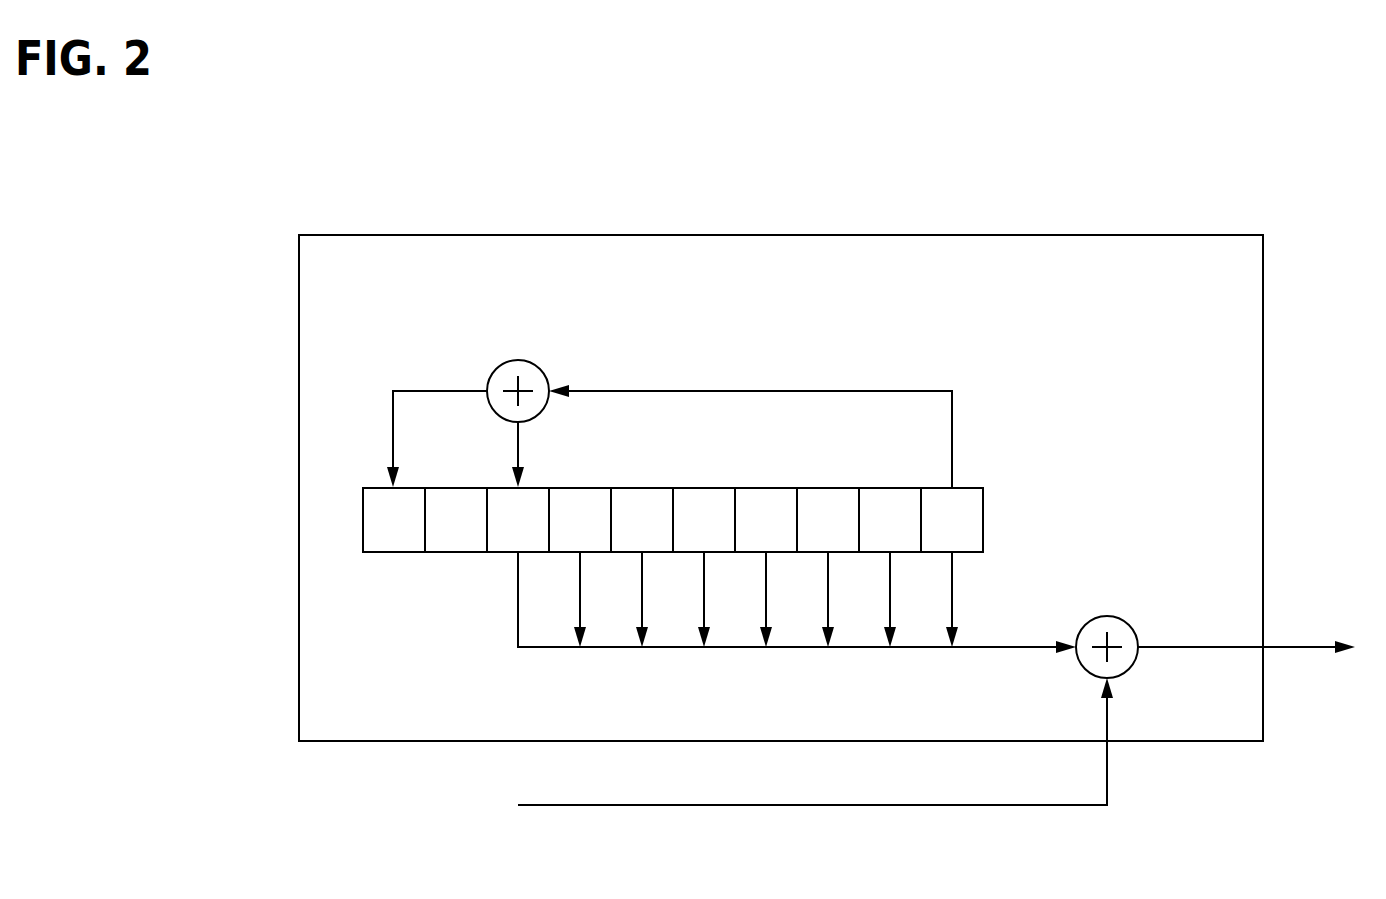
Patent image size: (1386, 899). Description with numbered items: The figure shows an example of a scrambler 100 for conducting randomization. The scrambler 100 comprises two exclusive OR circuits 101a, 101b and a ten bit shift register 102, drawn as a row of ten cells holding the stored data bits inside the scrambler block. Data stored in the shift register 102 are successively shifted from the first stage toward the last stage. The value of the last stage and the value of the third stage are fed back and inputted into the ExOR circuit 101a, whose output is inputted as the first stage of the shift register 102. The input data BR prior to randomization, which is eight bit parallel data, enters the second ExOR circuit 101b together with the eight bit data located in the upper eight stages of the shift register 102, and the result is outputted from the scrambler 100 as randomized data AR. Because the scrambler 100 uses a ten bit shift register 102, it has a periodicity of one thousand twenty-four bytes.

The scrambler 100 is at (362, 235).
The exclusive OR circuit 101a is at (517, 360).
The exclusive OR circuit 101b is at (1100, 617).
The 10 bit shift register 102 is at (985, 500).